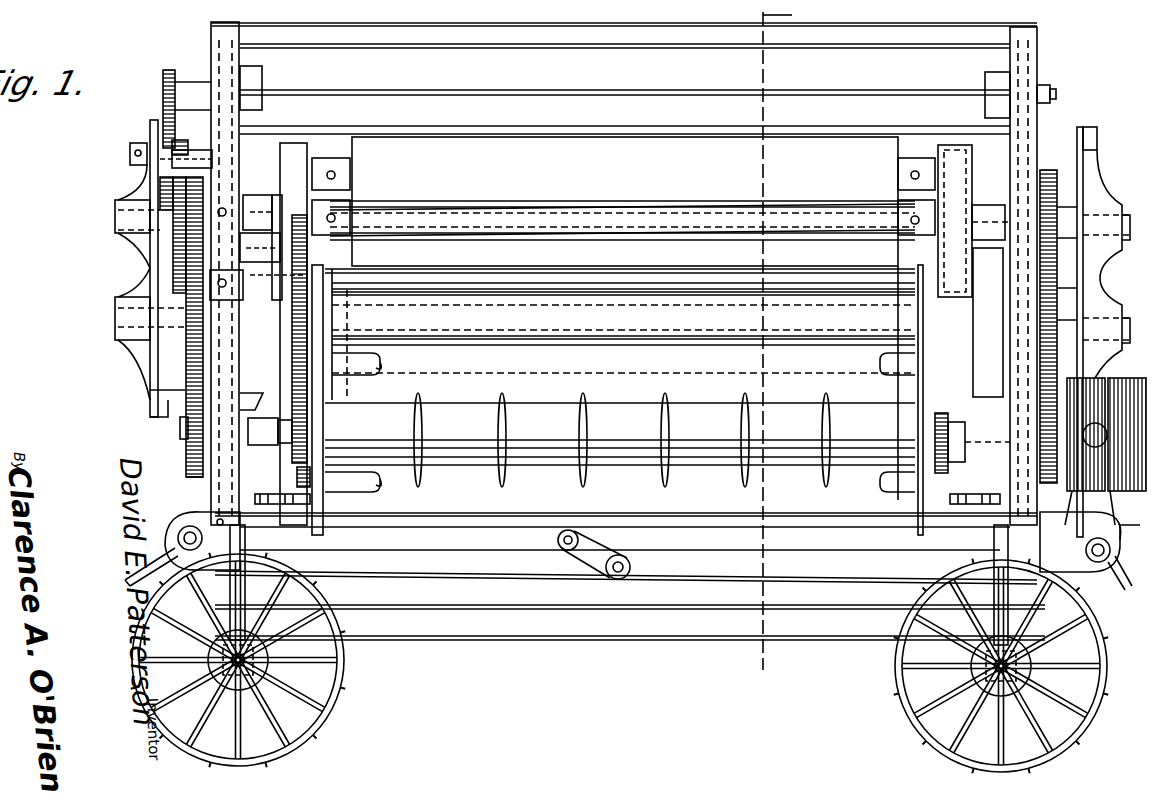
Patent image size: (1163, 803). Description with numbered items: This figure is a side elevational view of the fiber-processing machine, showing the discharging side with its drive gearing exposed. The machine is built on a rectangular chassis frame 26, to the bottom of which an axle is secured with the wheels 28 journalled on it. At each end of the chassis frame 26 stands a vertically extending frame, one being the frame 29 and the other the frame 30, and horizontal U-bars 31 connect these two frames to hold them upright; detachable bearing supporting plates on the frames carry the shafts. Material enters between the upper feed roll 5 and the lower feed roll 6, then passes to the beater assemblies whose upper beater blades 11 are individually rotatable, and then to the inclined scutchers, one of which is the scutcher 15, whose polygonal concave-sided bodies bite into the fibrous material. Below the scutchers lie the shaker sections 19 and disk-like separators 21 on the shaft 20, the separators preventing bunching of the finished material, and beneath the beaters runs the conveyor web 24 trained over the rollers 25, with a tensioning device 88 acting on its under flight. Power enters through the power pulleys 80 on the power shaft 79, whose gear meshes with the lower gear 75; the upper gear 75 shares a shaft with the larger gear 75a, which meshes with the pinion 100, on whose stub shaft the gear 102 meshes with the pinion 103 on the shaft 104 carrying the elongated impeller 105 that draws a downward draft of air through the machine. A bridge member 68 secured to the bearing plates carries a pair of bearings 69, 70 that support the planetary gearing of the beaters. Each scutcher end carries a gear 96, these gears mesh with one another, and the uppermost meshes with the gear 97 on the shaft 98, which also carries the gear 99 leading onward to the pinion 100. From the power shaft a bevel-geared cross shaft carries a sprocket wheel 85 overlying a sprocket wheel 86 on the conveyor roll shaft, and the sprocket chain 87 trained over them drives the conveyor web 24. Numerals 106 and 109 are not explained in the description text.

The upper feed roll 5 is at (605, 162).
The lower feed roll 6 is at (560, 262).
The upper beater blades 11 is at (660, 225).
The scutcher 15 is at (640, 292).
The shaker sections 19 is at (637, 476).
The shaft 20 is at (298, 472).
The disk-like separators 21 is at (503, 472).
The conveyor web 24 is at (420, 528).
The rollers 25 is at (188, 520).
The chassis frame 26 is at (622, 624).
The wheels 28 is at (345, 702).
The vertically extending frame 29 is at (215, 50).
The vertically extending frame 30 is at (1040, 68).
The horizontal U-bars 31 is at (456, 38).
The bridge member 68 is at (140, 186).
The bearing 69 is at (115, 232).
The bearing 70 is at (115, 302).
The gear 75 is at (208, 200).
The larger gear 75a is at (165, 196).
The power shaft 79 is at (182, 427).
The power pulleys 80 is at (1136, 522).
The sprocket wheel 85 is at (1100, 385).
The sprocket wheel 86 is at (1098, 508).
The sprocket chain 87 is at (1053, 508).
The tensioning device 88 is at (612, 562).
The gear 96 is at (320, 278).
The gear 97 is at (305, 165).
The shaft 98 is at (318, 222).
The gear 99 is at (176, 265).
The pinion 100 is at (190, 152).
The gear 102 is at (194, 131).
The pinion 103 is at (165, 98).
The shaft 104 is at (1056, 94).
The elongated impeller 105 is at (625, 97).
The gear hub 106 is at (188, 455).
The clutch block 109 is at (300, 432).